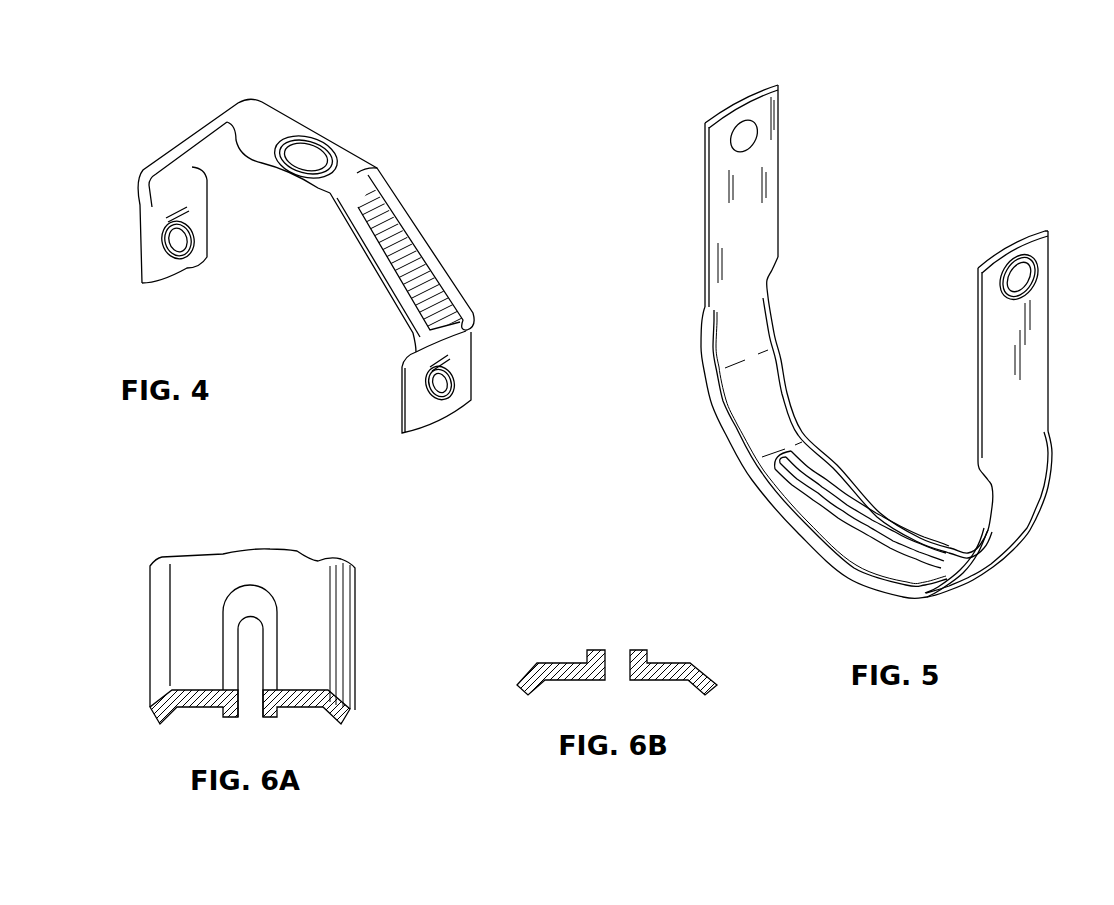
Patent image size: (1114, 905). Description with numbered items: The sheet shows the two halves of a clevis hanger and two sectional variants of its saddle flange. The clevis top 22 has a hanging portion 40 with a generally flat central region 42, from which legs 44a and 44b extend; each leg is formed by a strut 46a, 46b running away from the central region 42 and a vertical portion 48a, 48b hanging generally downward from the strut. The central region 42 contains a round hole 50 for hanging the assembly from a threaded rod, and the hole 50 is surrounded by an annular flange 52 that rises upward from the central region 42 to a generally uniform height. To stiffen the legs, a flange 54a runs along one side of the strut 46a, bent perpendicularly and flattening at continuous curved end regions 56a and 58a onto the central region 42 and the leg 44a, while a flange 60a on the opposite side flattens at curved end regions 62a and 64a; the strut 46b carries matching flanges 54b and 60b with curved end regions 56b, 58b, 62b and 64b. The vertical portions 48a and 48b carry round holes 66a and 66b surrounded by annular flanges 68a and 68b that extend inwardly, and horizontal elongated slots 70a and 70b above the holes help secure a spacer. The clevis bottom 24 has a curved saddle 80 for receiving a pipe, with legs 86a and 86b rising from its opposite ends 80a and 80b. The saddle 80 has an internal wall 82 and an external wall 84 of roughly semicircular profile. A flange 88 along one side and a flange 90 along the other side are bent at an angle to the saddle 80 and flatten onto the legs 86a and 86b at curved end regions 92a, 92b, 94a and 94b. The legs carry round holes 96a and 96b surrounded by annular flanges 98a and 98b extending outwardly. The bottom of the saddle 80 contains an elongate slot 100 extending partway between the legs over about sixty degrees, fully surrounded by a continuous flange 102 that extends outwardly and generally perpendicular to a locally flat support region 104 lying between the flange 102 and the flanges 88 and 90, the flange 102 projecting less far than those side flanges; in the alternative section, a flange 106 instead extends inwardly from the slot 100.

In FIG. 4, the clevis top 22 is at (106, 82).
In FIG. 5, the clevis bottom 24 is at (652, 71).
In FIG. 4, the hanging portion 40 is at (350, 136).
In FIG. 4, the central region 42 is at (358, 154).
In FIG. 4, the leg 44a is at (123, 160).
In FIG. 4, the leg 44b is at (480, 272).
In FIG. 4, the strut 46a is at (145, 150).
In FIG. 4, the strut 46b is at (445, 237).
In FIG. 4, the vertical portion 48a is at (140, 263).
In FIG. 4, the vertical portion 48b is at (398, 420).
In FIG. 4, the hole 50 is at (297, 170).
In FIG. 4, the annular flange 52 is at (312, 177).
In FIG. 4, the flange 54a is at (166, 150).
In FIG. 4, the flange 54b is at (375, 272).
In FIG. 4, the curved end region 56a is at (230, 122).
In FIG. 4, the curved end region 56b is at (333, 200).
In FIG. 4, the curved end region 58a is at (133, 189).
In FIG. 4, the curved end region 58b is at (402, 362).
In FIG. 4, the flange 60a is at (230, 106).
In FIG. 4, the flange 60b is at (427, 230).
In FIG. 4, the curved end region 62a is at (260, 113).
In FIG. 4, the curved end region 62b is at (378, 167).
In FIG. 4, the curved end region 64a is at (193, 168).
In FIG. 4, the curved end region 64b is at (480, 327).
In FIG. 4, the hole 66a is at (180, 259).
In FIG. 4, the hole 66b is at (453, 401).
In FIG. 4, the annular flange 68a is at (183, 246).
In FIG. 4, the annular flange 68b is at (446, 392).
In FIG. 4, the slot 70a is at (164, 211).
In FIG. 4, the slot 70b is at (455, 360).
In FIG. 5, the saddle 80 is at (730, 466).
In FIG. 6A, the saddle 80 is at (368, 661).
In FIG. 6B, the saddle 80 is at (674, 713).
In FIG. 5, the end 80a is at (741, 287).
In FIG. 5, the end 80b is at (1012, 450).
In FIG. 5, the internal wall 82 is at (771, 395).
In FIG. 5, the external wall 84 is at (1003, 512).
In FIG. 5, the leg 86a is at (685, 263).
In FIG. 5, the leg 86b is at (959, 355).
In FIG. 5, the flange 88 is at (714, 404).
In FIG. 6A, the flange 88 is at (148, 713).
In FIG. 6B, the flange 88 is at (523, 690).
In FIG. 5, the flange 90 is at (1029, 533).
In FIG. 6A, the flange 90 is at (362, 713).
In FIG. 6B, the flange 90 is at (717, 697).
In FIG. 5, the curved end region 92a is at (703, 312).
In FIG. 5, the curved end region 92b is at (977, 462).
In FIG. 5, the curved end region 94a is at (771, 267).
In FIG. 5, the curved end region 94b is at (1048, 438).
In FIG. 5, the hole 96a is at (748, 140).
In FIG. 5, the hole 96b is at (1008, 268).
In FIG. 5, the annular flange 98a is at (755, 131).
In FIG. 5, the annular flange 98b is at (1021, 253).
In FIG. 5, the slot 100 is at (882, 556).
In FIG. 6A, the slot 100 is at (252, 649).
In FIG. 6B, the slot 100 is at (615, 641).
In FIG. 5, the flange 102 is at (856, 546).
In FIG. 6A, the flange 102 is at (220, 714).
In FIG. 6B, the flange 102 is at (620, 672).
In FIG. 5, the support region 104 is at (839, 492).
In FIG. 6A, the support region 104 is at (185, 647).
In FIG. 6B, the flange 106 is at (585, 650).